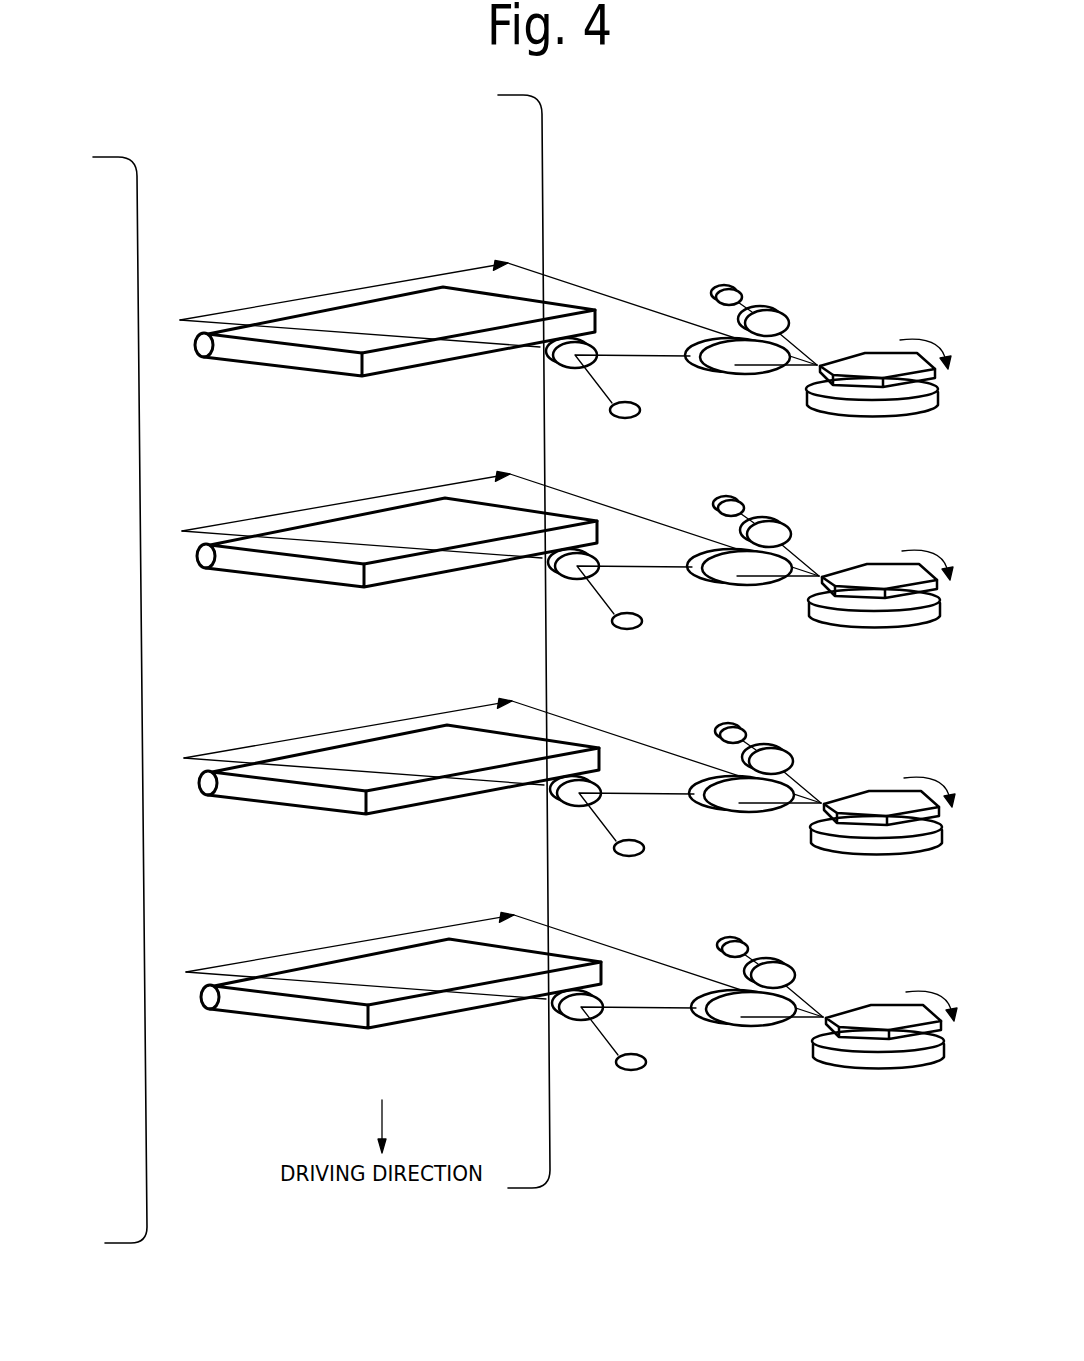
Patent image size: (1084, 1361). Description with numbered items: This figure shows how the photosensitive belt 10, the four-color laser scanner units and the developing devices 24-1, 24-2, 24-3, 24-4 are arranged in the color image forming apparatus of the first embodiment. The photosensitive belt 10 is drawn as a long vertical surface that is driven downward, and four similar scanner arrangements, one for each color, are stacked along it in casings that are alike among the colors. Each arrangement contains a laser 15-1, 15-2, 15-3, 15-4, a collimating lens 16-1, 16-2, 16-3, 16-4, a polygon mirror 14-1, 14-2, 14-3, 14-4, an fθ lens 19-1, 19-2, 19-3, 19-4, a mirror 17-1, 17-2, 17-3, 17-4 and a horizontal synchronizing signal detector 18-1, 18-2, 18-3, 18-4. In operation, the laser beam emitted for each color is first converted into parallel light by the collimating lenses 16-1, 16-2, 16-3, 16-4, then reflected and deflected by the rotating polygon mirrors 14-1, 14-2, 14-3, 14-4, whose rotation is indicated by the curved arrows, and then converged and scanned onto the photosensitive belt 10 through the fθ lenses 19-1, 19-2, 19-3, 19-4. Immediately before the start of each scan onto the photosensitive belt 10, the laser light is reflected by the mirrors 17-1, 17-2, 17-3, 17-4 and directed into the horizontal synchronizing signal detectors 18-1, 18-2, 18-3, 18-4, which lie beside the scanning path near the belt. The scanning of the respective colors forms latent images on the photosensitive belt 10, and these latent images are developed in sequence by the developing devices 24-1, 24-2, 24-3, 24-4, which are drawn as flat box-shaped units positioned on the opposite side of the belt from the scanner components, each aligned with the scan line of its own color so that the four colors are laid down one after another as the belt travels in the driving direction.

The photosensitive belt 10 is at (528, 176).
The polygon mirror 14-1 is at (858, 352).
The polygon mirror 14-2 is at (880, 570).
The polygon mirror 14-3 is at (882, 797).
The polygon mirror 14-4 is at (884, 1011).
The laser 15-1 is at (727, 288).
The laser 15-2 is at (747, 483).
The laser 15-3 is at (749, 710).
The laser 15-4 is at (751, 924).
The collimating lens 16-1 is at (777, 312).
The collimating lens 16-2 is at (790, 522).
The collimating lens 16-3 is at (792, 749).
The collimating lens 16-4 is at (794, 963).
The mirror 17-1 is at (571, 368).
The mirror 17-2 is at (620, 593).
The mirror 17-3 is at (622, 820).
The mirror 17-4 is at (624, 1034).
The horizontal synchronizing signal detector 18-1 is at (617, 420).
The horizontal synchronizing signal detector 18-2 is at (613, 645).
The horizontal synchronizing signal detector 18-3 is at (615, 872).
The horizontal synchronizing signal detector 18-4 is at (617, 1086).
The fθ lens 19-1 is at (730, 377).
The fθ lens 19-2 is at (753, 596).
The fθ lens 19-3 is at (755, 823).
The fθ lens 19-4 is at (757, 1037).
The developing device 24-1 is at (273, 357).
The developing device 24-2 is at (397, 564).
The developing device 24-3 is at (399, 791).
The developing device 24-4 is at (401, 1005).